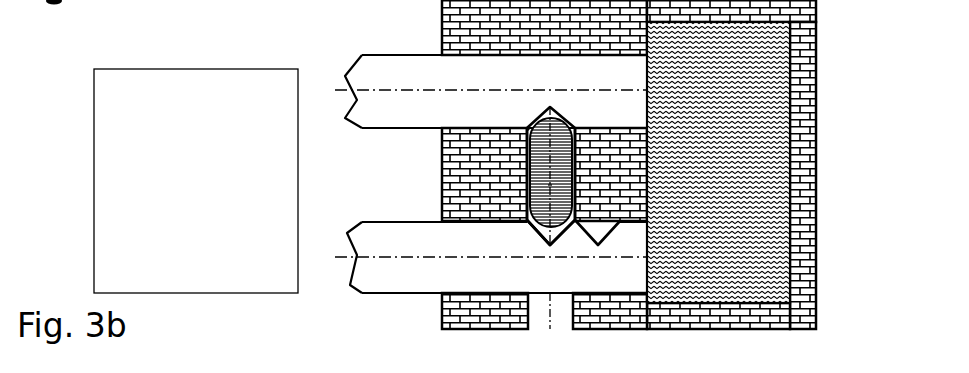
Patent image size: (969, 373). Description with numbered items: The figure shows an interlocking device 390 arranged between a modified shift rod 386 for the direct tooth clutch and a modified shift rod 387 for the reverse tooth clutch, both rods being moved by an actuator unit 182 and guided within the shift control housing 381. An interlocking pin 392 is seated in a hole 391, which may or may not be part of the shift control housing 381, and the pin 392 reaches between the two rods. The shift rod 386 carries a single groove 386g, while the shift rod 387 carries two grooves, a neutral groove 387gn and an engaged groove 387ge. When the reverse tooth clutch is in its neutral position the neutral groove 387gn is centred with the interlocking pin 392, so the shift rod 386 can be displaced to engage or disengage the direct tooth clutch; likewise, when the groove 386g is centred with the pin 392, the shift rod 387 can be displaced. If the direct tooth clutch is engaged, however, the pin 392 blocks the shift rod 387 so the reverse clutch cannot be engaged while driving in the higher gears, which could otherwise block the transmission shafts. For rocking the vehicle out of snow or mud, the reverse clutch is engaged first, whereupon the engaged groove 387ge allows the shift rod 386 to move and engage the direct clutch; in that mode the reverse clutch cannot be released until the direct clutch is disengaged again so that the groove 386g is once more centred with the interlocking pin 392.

The actuator unit 182 is at (718, 162).
The shift control housing 381 is at (440, 32).
The shift rod 386 is at (392, 80).
The groove 386g is at (535, 110).
The shift rod 387 is at (430, 281).
The neutral groove 387gn is at (535, 238).
The engaged groove 387ge is at (587, 233).
The interlocking device 390 is at (148, 100).
The hole 391 is at (520, 133).
The interlocking pin 392 is at (560, 185).